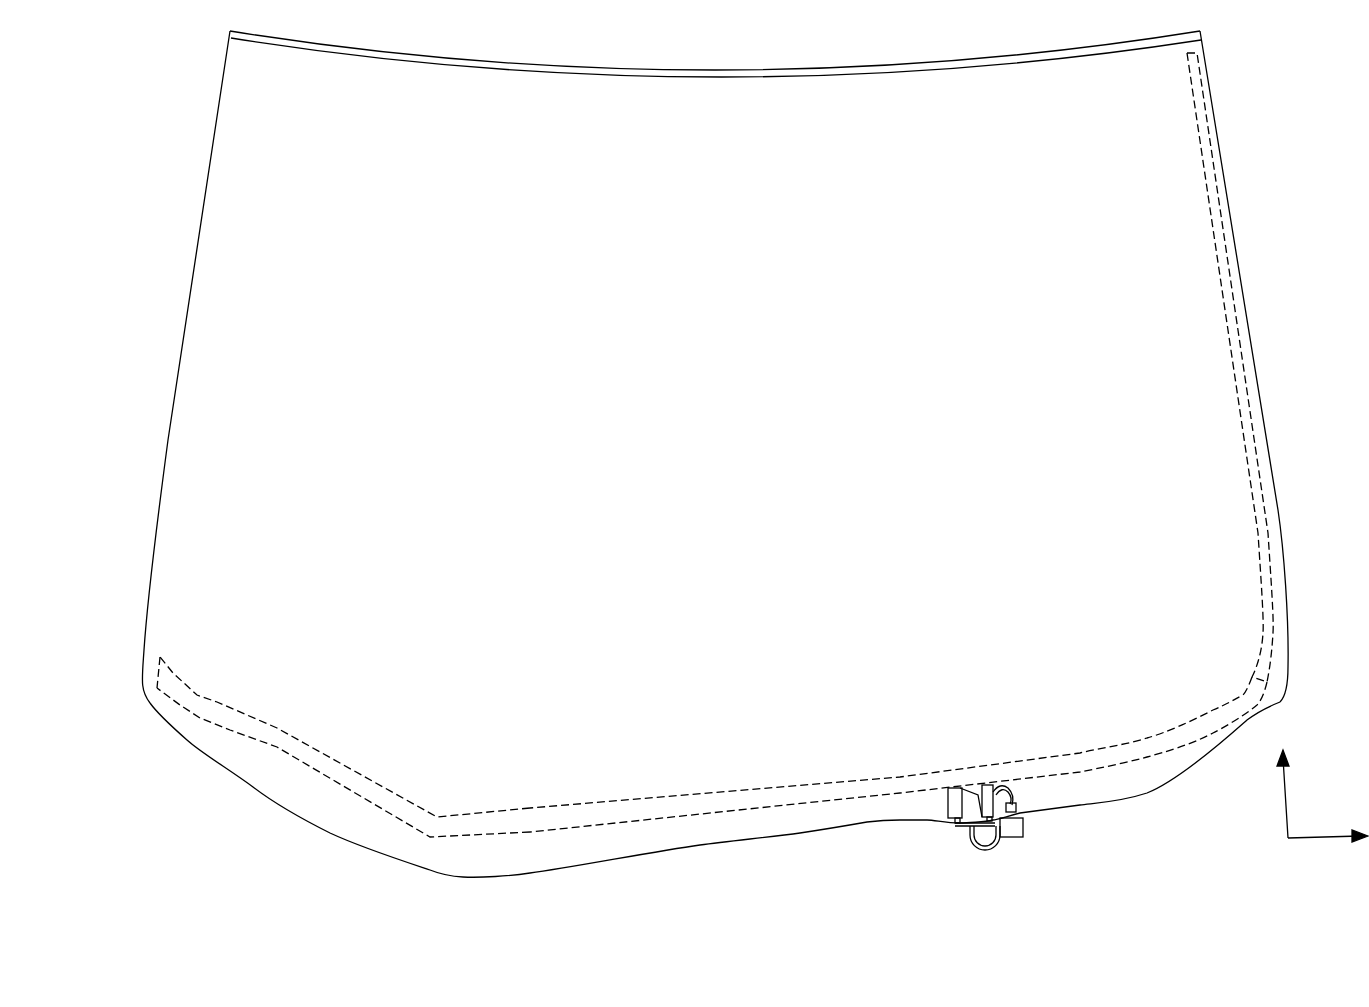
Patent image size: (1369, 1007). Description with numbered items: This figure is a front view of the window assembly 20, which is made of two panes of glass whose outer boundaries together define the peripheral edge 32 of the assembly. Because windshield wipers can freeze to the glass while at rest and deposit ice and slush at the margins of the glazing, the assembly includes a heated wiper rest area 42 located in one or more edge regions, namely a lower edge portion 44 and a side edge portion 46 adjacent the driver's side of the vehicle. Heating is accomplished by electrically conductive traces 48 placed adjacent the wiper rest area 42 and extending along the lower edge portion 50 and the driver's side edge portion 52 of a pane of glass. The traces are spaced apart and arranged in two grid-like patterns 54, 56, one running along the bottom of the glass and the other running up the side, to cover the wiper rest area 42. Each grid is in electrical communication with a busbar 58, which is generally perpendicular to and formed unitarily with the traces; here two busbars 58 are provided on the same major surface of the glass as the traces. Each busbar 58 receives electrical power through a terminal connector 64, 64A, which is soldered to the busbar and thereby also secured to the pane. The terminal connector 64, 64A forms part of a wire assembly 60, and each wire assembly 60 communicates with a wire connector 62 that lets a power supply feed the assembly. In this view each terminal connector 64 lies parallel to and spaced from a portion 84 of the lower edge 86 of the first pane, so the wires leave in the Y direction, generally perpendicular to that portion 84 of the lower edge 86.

The window assembly 20 is at (153, 144).
The peripheral edge 32 is at (165, 440).
The wiper rest area 42 is at (610, 747).
The lower edge portion 44 is at (512, 832).
The side edge portion 46 is at (1227, 173).
The electrically conductive traces 48 is at (1137, 758).
The lower edge portion of the pane of glass 50 is at (200, 710).
The driver's side edge portion of the pane of glass 52 is at (1247, 375).
The grid-like pattern 54 is at (280, 742).
The grid-like pattern 56 is at (1227, 227).
The busbar 58 is at (960, 787).
The wire assembly 60 is at (970, 833).
The wire connector 62 is at (1013, 840).
The terminal connector 64 is at (913, 763).
The terminal connector 64A is at (948, 792).
The portion of the lower edge 84 is at (963, 830).
The lower edge 86 is at (685, 852).